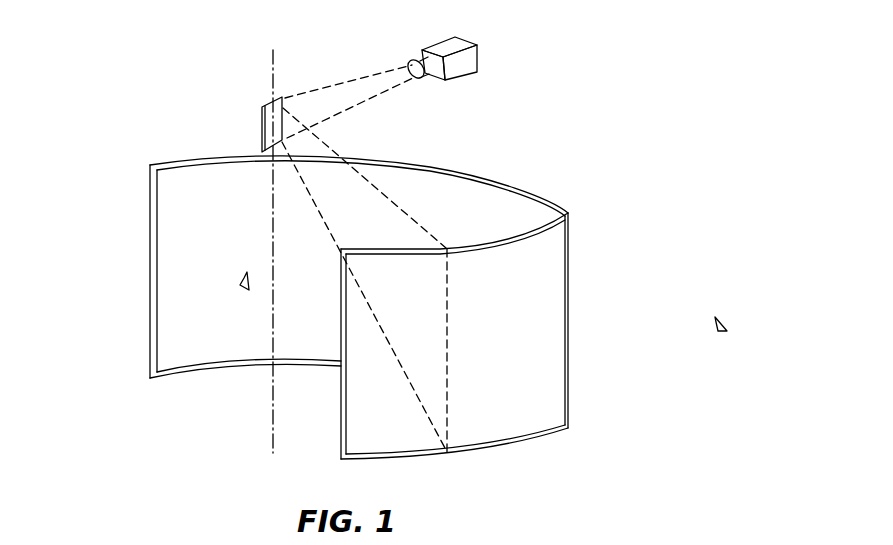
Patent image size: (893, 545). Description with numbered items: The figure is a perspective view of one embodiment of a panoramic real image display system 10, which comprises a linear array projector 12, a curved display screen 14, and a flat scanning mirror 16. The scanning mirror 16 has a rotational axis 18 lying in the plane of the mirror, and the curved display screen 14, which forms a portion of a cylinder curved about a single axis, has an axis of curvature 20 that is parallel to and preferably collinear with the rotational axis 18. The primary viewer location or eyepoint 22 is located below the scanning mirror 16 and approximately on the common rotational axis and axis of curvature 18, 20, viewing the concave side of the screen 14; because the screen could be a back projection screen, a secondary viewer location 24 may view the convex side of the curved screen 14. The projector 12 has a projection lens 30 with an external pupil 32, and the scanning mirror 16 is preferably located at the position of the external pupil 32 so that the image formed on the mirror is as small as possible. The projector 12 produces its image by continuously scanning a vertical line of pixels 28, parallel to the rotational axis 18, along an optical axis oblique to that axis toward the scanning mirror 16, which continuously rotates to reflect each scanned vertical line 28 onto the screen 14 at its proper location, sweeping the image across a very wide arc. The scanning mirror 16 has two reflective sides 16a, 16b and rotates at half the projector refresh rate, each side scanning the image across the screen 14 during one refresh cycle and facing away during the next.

The panoramic real image display system 10 is at (142, 110).
The linear array projector 12 is at (468, 68).
The curved display screen 14 is at (560, 254).
The scanning mirror 16 is at (262, 103).
The reflective side 16a is at (262, 140).
The reflective side 16b is at (262, 113).
The rotational axis 18 is at (212, 257).
The axis of curvature 20 is at (273, 426).
The primary viewer location 22 is at (240, 285).
The secondary viewer location 24 is at (724, 333).
The vertical line of pixels 28 is at (447, 318).
The projection lens 30 is at (420, 64).
The external pupil 32 is at (284, 99).